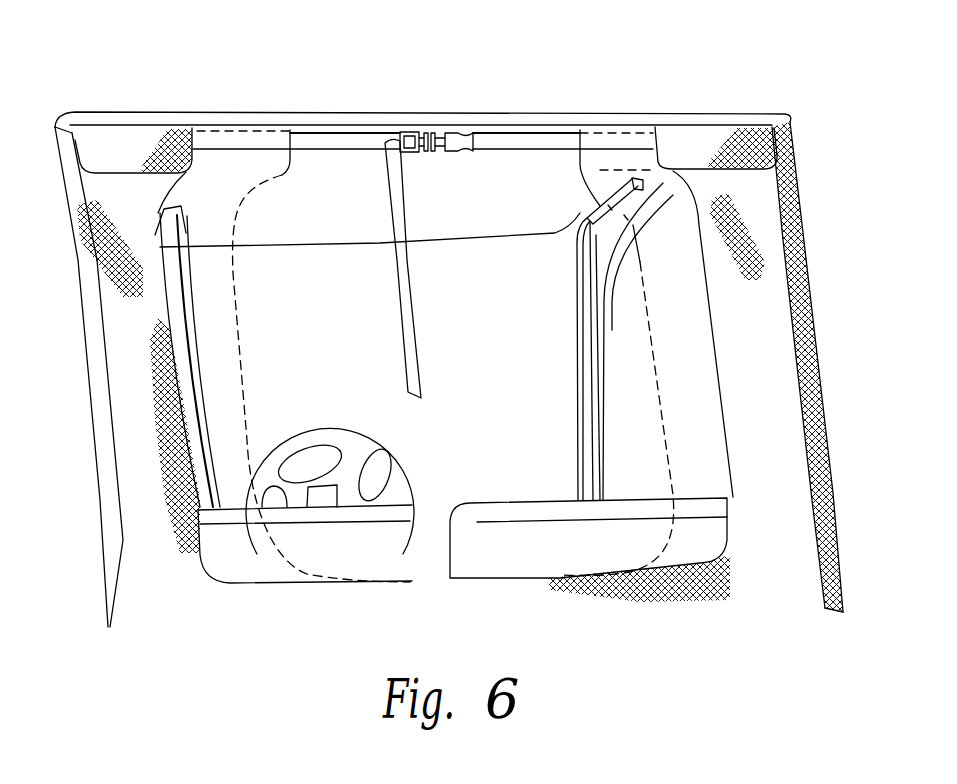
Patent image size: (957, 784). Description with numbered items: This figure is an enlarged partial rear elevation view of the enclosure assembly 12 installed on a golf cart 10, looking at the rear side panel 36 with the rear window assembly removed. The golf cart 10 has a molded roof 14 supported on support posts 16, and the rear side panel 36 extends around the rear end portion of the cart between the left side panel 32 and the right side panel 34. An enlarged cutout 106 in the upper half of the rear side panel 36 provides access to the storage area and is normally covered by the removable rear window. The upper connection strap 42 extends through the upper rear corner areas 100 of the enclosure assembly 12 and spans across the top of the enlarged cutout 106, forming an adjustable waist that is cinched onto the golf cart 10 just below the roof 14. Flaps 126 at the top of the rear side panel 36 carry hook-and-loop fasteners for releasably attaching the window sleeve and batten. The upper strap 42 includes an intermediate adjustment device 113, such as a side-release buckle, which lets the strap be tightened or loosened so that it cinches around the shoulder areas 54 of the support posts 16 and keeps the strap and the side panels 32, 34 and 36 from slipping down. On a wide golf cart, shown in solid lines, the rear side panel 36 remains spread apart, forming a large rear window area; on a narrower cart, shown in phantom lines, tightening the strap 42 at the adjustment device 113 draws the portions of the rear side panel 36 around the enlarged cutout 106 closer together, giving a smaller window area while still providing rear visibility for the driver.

The golf cart 10 is at (687, 83).
The enclosure assembly 12 is at (816, 281).
The molded roof 14 is at (570, 112).
The support posts 16 is at (578, 316).
The left side panel 32 is at (173, 315).
The right side panel 34 is at (633, 400).
The rear side panel 36 is at (763, 412).
The upper connection strap 42 is at (333, 143).
The shoulder areas 54 is at (577, 217).
The upper rear corner area 100 is at (115, 140).
The enlarged cutout 106 is at (712, 341).
The intermediate adjustment device 113 is at (450, 133).
The flaps 126 is at (157, 147).